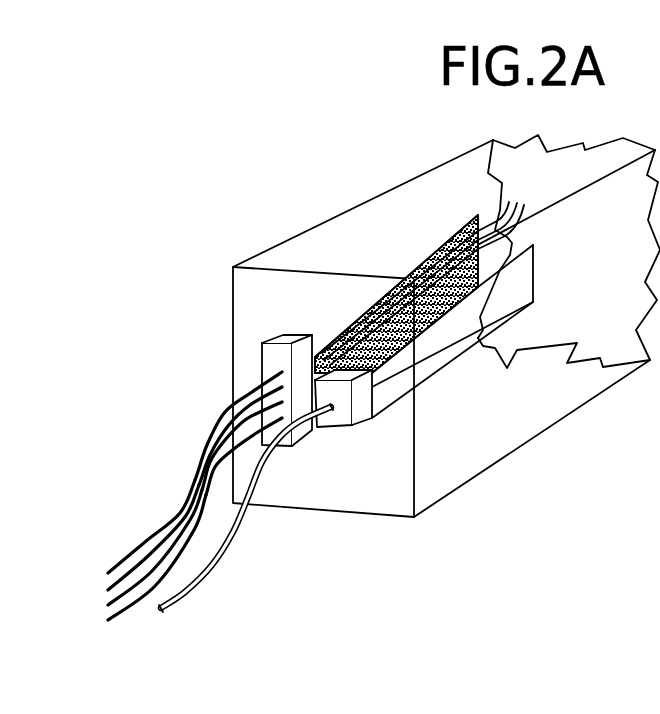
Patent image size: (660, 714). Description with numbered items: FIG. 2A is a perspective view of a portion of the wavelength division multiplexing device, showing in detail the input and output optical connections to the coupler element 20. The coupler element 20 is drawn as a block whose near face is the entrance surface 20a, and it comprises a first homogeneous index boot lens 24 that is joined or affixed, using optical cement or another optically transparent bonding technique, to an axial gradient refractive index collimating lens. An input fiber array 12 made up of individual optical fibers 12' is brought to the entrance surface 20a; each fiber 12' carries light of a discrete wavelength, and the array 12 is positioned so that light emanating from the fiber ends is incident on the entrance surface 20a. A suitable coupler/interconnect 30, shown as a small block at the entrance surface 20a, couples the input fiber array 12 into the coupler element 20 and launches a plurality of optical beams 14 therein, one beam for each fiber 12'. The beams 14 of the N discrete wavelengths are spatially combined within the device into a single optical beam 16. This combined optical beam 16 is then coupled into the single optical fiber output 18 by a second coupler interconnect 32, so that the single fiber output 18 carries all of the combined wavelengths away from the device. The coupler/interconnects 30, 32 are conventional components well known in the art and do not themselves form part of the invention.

The input fiber array 12 is at (134, 556).
The optical fiber 12' is at (198, 433).
The optical beams of discrete wavelengths 14 is at (480, 288).
The single optical beam 16 is at (521, 283).
The single optical fiber output 18 is at (232, 545).
The coupler element 20 is at (288, 202).
The entrance surface 20a is at (247, 357).
The first homogeneous index boot lens 24 is at (400, 236).
The coupler/interconnect 30 is at (276, 334).
The coupler interconnect 32 is at (358, 406).